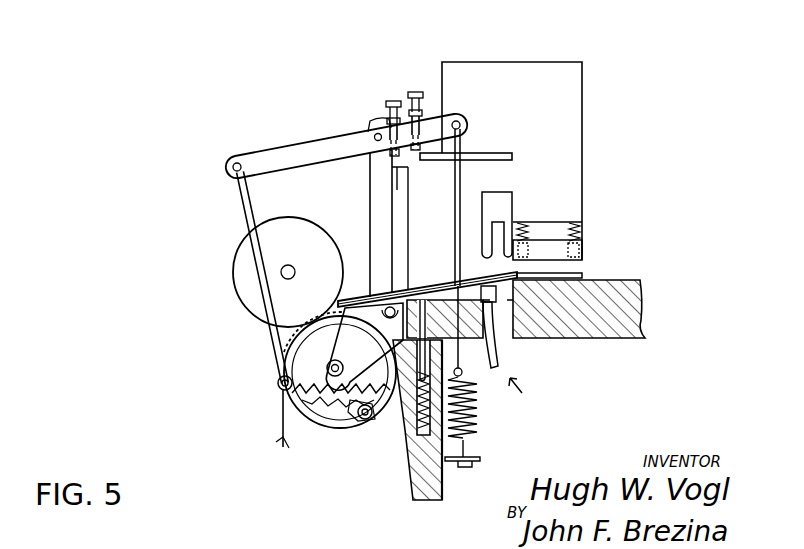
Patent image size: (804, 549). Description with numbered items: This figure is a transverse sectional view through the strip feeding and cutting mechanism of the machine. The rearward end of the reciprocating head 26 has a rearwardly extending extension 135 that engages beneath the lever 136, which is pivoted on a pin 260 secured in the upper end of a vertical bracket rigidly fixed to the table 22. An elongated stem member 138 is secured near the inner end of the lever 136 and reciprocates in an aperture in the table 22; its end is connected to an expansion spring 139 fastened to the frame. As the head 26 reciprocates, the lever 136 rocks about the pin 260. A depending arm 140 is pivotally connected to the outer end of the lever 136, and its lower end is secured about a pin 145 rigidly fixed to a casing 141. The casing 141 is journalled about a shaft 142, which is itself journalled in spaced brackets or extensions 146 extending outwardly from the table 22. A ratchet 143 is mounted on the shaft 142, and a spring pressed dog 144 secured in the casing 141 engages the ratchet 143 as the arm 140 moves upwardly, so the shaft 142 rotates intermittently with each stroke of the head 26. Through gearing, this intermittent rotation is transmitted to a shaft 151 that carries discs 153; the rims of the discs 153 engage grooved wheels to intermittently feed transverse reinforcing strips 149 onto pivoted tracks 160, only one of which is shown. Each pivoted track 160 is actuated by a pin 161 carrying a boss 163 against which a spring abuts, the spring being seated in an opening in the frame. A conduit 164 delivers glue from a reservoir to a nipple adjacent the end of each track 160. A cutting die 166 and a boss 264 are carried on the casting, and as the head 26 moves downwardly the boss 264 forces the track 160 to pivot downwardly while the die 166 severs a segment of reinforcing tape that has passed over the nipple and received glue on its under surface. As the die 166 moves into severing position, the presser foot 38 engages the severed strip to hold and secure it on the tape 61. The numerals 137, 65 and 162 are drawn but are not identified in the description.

The head 26 is at (527, 62).
The pin 260 is at (376, 134).
The lever 136 is at (290, 145).
The vertical support bar 137 is at (370, 179).
The extension 135 is at (431, 160).
The stem member 138 is at (455, 231).
The boss 264 is at (486, 232).
The cutting die 166 is at (518, 222).
The presser foot 38 is at (583, 258).
The pivoted track 160 is at (428, 286).
The tape 61 is at (600, 279).
The transverse reinforcing strip 149 is at (584, 276).
The table 22 is at (598, 331).
The coupling block 65 is at (481, 286).
The conduit 164 is at (499, 359).
The boss 163 is at (459, 356).
The pin 161 is at (453, 384).
The expansion spring 139 is at (478, 411).
The post 162 is at (409, 472).
The depending arm 140 is at (277, 341).
The bracket 146 is at (332, 353).
The casing 141 is at (391, 402).
The shaft 142 is at (335, 393).
The spring pressed dog 144 is at (365, 420).
The pin 145 is at (278, 386).
The ratchet 143 is at (327, 391).
The disc 153 is at (268, 313).
The shaft 151 is at (282, 274).